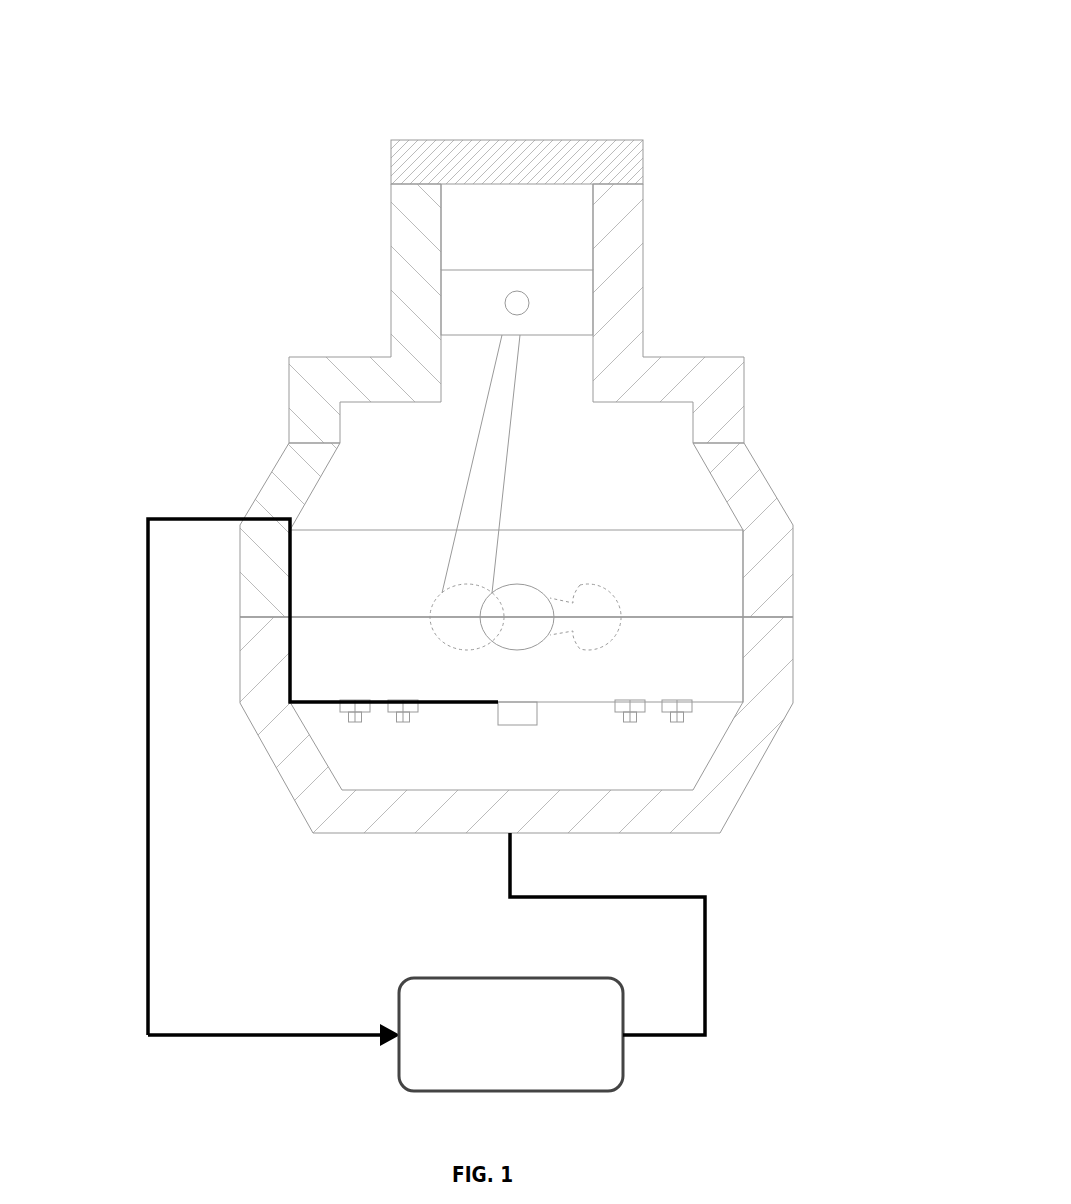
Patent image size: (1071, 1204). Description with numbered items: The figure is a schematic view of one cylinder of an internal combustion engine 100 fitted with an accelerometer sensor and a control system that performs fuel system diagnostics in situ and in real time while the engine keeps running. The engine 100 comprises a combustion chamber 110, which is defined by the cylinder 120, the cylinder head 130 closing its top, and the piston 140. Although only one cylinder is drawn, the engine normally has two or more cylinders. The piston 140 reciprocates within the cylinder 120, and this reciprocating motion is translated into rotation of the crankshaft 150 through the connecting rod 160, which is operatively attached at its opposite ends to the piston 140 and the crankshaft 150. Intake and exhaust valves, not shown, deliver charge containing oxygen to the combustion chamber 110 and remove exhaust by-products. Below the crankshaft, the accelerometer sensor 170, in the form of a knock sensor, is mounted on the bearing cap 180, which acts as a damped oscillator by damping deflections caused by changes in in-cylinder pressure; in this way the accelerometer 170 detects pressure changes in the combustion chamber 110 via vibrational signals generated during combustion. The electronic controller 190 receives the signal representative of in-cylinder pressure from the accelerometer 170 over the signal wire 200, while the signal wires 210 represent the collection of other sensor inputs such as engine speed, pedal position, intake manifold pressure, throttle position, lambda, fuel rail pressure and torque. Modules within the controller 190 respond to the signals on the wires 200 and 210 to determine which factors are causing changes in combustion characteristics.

The internal combustion engine 100 is at (824, 112).
The combustion chamber 110 is at (536, 232).
The cylinder 120 is at (407, 235).
The cylinder head 130 is at (407, 161).
The piston 140 is at (572, 297).
The crankshaft 150 is at (523, 583).
The connecting rod 160 is at (483, 478).
The accelerometer sensor 170 is at (525, 715).
The bearing cap 180 is at (456, 675).
The electronic controller 190 is at (443, 978).
The signal wire 200 is at (148, 656).
The signal wires 210 is at (705, 947).